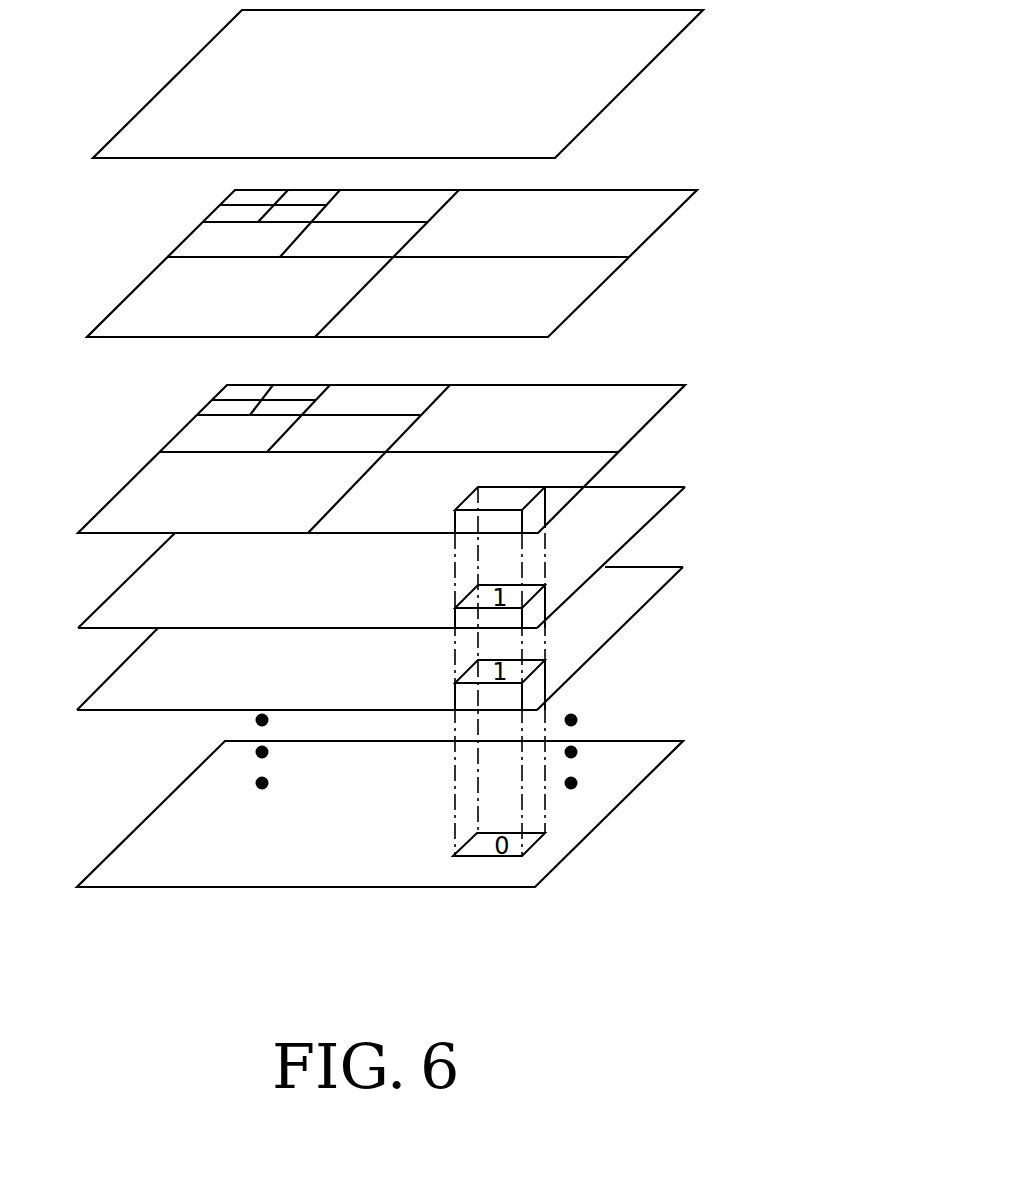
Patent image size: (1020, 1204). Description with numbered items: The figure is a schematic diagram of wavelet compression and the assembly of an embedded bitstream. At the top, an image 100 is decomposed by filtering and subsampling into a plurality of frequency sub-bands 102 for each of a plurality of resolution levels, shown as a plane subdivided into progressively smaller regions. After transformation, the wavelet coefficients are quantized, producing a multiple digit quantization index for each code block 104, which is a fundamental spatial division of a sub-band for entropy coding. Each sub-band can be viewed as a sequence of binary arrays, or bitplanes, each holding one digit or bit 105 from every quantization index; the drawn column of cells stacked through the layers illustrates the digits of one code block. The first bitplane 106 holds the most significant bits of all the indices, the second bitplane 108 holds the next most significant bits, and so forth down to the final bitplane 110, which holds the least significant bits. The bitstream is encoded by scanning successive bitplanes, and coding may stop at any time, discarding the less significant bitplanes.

The image 100 is at (673, 43).
The frequency sub-bands 102 is at (630, 219).
The code block 104 is at (536, 488).
The bit 105 is at (507, 490).
The first bitplane 106 is at (688, 386).
The second bitplane 108 is at (660, 508).
The final bitplane 110 is at (658, 768).